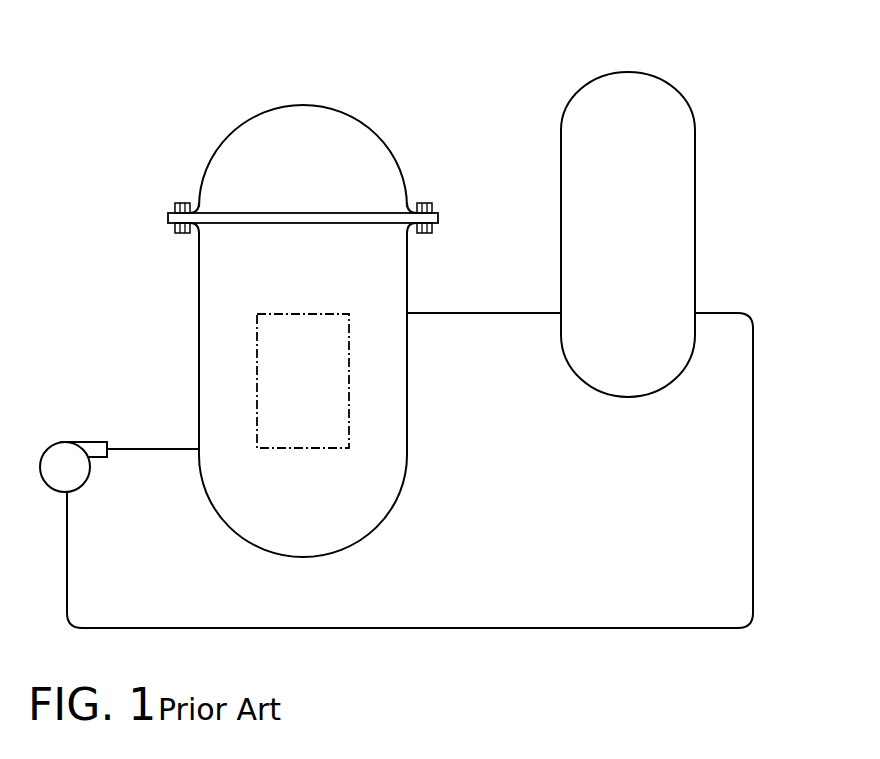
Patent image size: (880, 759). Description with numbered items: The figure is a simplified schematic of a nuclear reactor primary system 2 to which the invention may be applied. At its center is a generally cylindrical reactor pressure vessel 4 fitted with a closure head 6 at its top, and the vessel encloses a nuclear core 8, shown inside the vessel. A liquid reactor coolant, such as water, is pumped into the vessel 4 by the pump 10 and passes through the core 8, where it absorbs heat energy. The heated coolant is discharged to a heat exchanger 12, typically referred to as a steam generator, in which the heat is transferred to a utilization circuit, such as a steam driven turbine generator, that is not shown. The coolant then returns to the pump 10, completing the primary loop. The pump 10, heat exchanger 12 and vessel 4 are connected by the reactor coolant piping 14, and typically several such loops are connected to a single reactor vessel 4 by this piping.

The nuclear reactor primary system 2 is at (449, 98).
The reactor pressure vessel 4 is at (413, 423).
The closure head 6 is at (210, 162).
The nuclear core 8 is at (257, 370).
The pump 10 is at (62, 441).
The heat exchanger 12 is at (697, 173).
The reactor coolant piping 14 is at (755, 560).